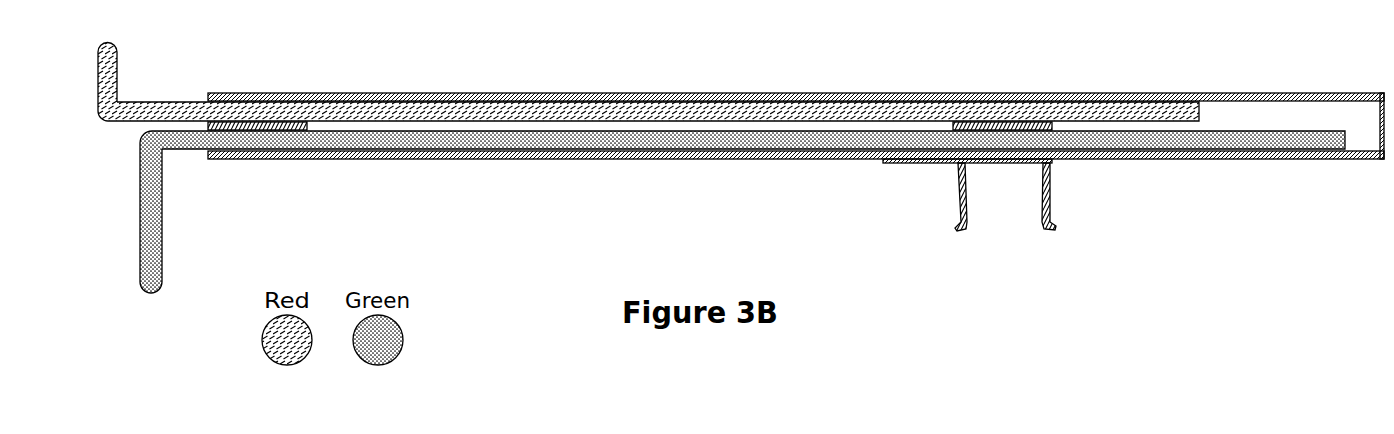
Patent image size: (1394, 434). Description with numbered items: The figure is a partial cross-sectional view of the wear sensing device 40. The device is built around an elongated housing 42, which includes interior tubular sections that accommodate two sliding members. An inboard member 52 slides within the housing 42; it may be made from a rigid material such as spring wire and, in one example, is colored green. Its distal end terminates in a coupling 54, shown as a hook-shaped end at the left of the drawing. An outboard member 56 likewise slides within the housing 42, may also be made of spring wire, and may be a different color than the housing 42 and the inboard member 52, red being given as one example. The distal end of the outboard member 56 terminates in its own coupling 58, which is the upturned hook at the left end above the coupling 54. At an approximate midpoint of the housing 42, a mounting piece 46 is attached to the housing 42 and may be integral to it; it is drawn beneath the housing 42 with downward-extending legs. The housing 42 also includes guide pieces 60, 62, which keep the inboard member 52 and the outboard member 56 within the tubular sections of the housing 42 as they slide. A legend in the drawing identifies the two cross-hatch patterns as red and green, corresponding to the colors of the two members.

The wear sensing device 40 is at (518, 276).
The housing 42 is at (567, 93).
The mounting piece 46 is at (958, 193).
The inboard member 52 is at (488, 135).
The coupling 54 is at (162, 228).
The outboard member 56 is at (393, 108).
The coupling 58 is at (160, 102).
The guide piece 60 is at (1007, 163).
The guide piece 62 is at (278, 152).